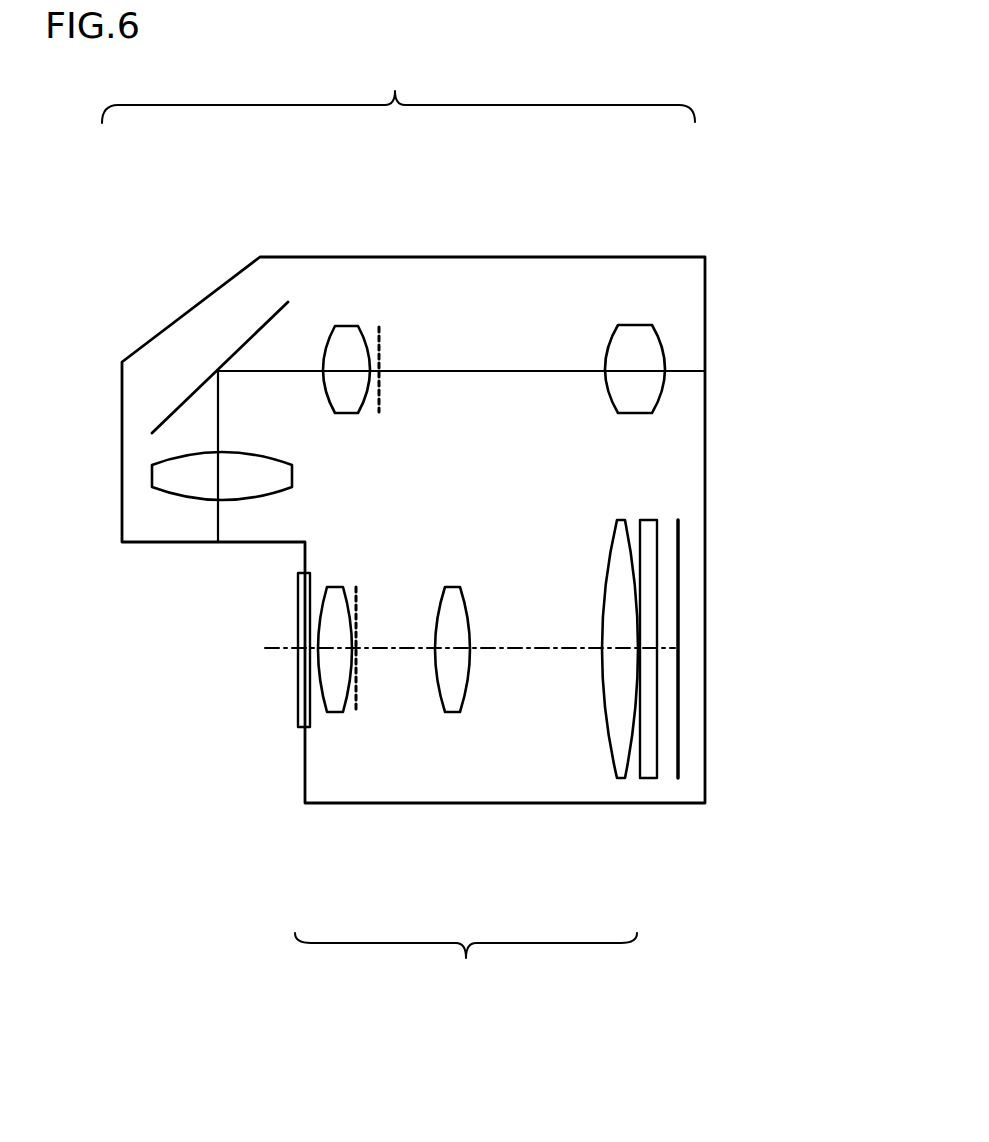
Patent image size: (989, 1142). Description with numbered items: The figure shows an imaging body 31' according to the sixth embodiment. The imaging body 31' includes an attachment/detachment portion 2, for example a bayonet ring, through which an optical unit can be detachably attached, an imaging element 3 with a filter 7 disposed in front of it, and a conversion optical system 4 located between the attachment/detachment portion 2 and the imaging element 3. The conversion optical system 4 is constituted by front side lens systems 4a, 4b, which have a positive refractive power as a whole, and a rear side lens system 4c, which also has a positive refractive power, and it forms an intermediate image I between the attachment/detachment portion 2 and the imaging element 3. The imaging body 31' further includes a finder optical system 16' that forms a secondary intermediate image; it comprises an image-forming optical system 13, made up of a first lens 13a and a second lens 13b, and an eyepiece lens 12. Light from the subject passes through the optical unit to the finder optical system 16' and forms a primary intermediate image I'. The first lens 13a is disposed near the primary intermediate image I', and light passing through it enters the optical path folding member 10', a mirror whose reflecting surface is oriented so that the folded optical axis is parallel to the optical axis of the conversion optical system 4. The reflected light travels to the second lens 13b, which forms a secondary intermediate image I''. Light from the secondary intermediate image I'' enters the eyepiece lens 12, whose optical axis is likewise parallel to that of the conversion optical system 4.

The imaging body 31' is at (476, 476).
The finder optical system 16' is at (398, 88).
The image-forming optical system 13 is at (267, 313).
The first lens 13a is at (272, 473).
The second lens 13b is at (348, 333).
The optical path folding member 10' is at (214, 304).
The secondary intermediate image I'' is at (443, 296).
The eyepiece lens 12 is at (635, 344).
The primary intermediate image I' is at (110, 484).
The attachment/detachment portion 2 is at (298, 677).
The conversion optical system 4 is at (466, 757).
The front side lens system 4a is at (335, 692).
The front side lens system 4b is at (453, 692).
The rear side lens system 4c is at (622, 757).
The intermediate image I is at (379, 724).
The filter 7 is at (650, 760).
The imaging element 3 is at (678, 615).